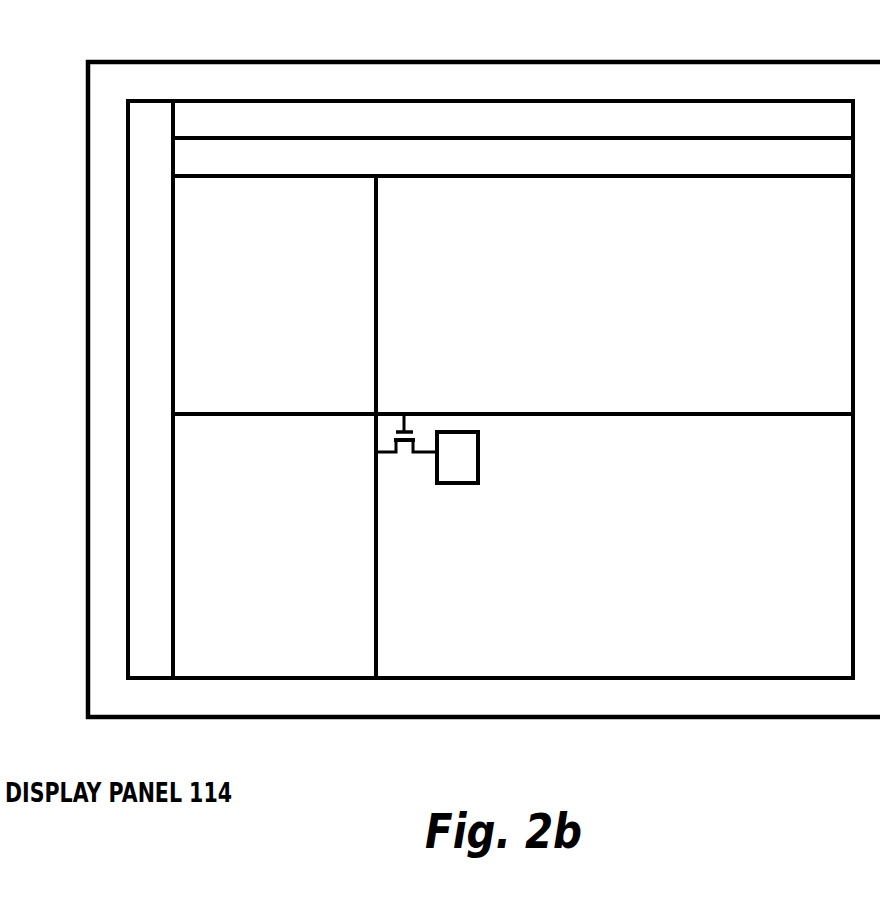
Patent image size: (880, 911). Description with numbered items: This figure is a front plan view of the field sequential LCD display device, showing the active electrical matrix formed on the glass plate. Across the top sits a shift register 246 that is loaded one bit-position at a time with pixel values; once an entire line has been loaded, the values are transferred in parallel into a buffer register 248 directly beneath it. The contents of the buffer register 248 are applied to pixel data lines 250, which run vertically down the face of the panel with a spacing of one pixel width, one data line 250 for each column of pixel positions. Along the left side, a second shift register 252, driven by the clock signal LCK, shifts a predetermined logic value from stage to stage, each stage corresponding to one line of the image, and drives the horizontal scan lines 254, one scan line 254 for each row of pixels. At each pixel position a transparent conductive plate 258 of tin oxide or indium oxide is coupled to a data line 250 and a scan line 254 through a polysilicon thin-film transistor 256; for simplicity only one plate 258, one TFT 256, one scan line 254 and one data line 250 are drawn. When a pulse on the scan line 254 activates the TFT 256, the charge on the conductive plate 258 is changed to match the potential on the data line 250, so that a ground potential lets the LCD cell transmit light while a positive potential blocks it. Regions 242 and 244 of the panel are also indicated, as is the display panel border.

The vertical shift register 242 is at (197, 660).
The display panel substrate 244 is at (459, 697).
The shift register 246 is at (224, 103).
The buffer register 248 is at (770, 177).
The data line 250 is at (376, 293).
The shift register 252 is at (174, 237).
The scan line 254 is at (778, 416).
The thin-film transistor 256 is at (408, 453).
The conductive plate 258 is at (479, 445).